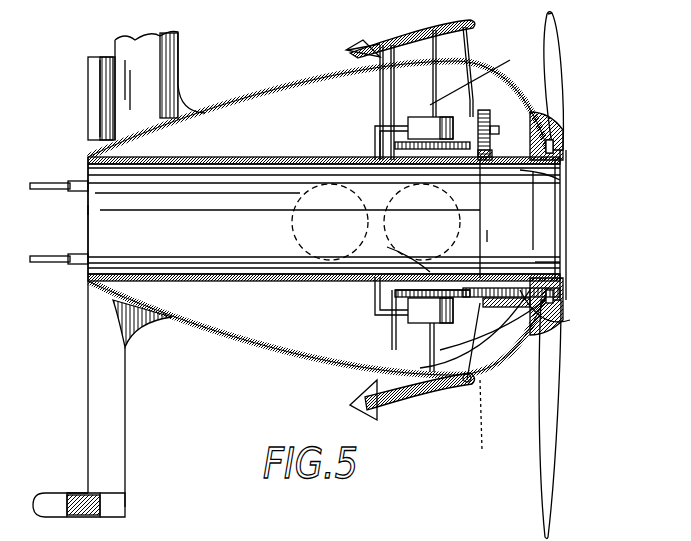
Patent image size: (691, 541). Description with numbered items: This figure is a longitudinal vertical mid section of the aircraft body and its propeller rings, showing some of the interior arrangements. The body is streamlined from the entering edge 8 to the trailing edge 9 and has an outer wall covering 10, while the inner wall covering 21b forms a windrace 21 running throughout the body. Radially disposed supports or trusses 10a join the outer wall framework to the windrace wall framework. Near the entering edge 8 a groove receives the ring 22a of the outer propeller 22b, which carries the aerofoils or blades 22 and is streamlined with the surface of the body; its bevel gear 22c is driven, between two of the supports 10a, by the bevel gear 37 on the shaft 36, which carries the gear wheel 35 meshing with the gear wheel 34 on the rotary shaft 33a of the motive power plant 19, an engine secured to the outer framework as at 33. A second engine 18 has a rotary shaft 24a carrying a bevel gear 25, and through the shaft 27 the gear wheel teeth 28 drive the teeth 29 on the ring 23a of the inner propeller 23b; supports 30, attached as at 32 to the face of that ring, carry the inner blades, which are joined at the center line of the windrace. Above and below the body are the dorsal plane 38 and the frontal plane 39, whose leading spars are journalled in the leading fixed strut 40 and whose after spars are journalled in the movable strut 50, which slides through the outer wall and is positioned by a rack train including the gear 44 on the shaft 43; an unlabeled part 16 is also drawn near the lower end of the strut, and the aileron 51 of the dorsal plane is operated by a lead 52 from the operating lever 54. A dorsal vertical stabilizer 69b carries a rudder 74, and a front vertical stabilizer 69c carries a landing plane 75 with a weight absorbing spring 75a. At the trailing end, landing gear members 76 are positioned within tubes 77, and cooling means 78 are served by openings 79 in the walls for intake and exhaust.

The entering edge 8 is at (563, 154).
The trailing edge 9 is at (88, 210).
The covering of the outer wall 10 is at (220, 103).
The radially disposed support or truss 10a is at (553, 132).
The strut lower end 16 is at (466, 118).
The internal combustion engine 18 is at (407, 124).
The motive power plant 19 is at (405, 318).
The windrace 21 is at (205, 158).
The covering of the inner wall 21b is at (147, 219).
The aerofoils or blades 22 is at (555, 92).
The ring of the outer propeller 22a is at (552, 140).
The outer propeller 22b is at (573, 88).
The bevel gear 22c is at (565, 305).
The ring of the inner propeller 23a is at (480, 221).
The inner propeller 23b is at (548, 207).
The rotary shaft 24a is at (417, 163).
The bevel gear 25 is at (395, 144).
The shaft 27 is at (492, 130).
The gear wheel teeth 28 is at (490, 112).
The ring teeth 29 is at (492, 155).
The supports 30 is at (533, 172).
The support attachment 32 is at (487, 242).
The engine securing point 33 is at (477, 378).
The rotary shaft 33a is at (396, 252).
The gear wheel 34 is at (380, 298).
The gear wheel 35 is at (543, 265).
The shaft 36 is at (485, 345).
The bevel gear 37 is at (563, 320).
The dorsal plane 38 is at (415, 40).
The frontal plane 39 is at (420, 385).
The leading fixed strut 40 is at (470, 48).
The shaft 43 is at (565, 178).
The gear 44 is at (432, 82).
The movable strut 50 is at (391, 100).
The aileron 51 is at (355, 45).
The lead 52 is at (488, 68).
The operating lever 54 is at (410, 408).
The dorsal vertical stabilizer 69b is at (165, 66).
The front vertical stabilizer 69c is at (118, 380).
The rudder 74 is at (95, 100).
The landing plane 75 is at (75, 481).
The weight absorbing spring 75a is at (95, 517).
The landing gear member 76 is at (40, 176).
The tube 77 is at (75, 181).
The cooling means 78 is at (375, 128).
The opening 79 is at (373, 165).